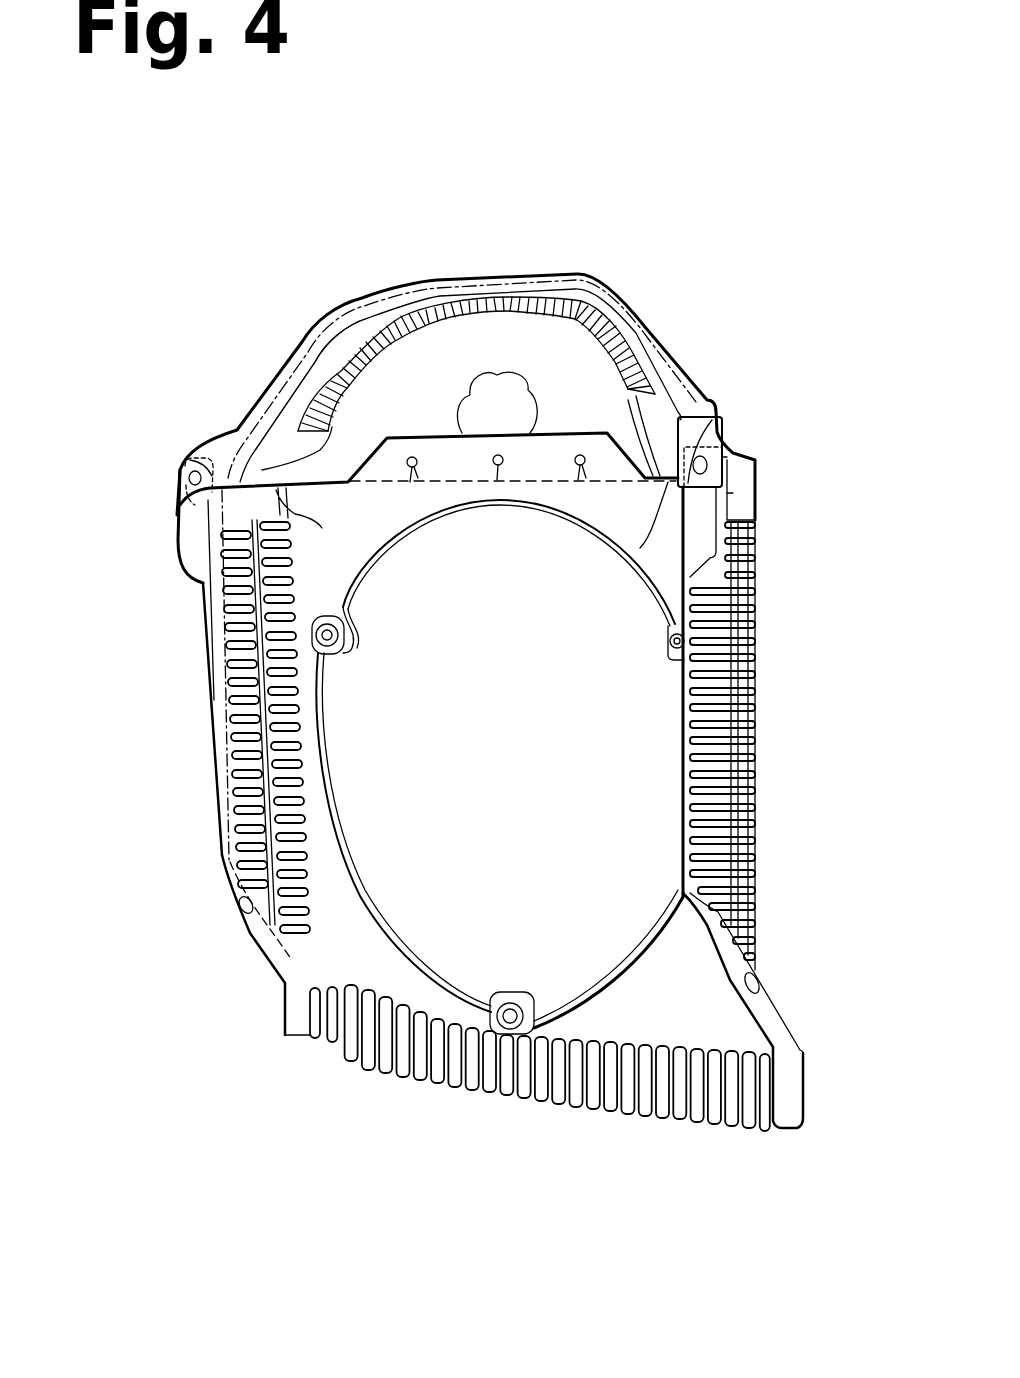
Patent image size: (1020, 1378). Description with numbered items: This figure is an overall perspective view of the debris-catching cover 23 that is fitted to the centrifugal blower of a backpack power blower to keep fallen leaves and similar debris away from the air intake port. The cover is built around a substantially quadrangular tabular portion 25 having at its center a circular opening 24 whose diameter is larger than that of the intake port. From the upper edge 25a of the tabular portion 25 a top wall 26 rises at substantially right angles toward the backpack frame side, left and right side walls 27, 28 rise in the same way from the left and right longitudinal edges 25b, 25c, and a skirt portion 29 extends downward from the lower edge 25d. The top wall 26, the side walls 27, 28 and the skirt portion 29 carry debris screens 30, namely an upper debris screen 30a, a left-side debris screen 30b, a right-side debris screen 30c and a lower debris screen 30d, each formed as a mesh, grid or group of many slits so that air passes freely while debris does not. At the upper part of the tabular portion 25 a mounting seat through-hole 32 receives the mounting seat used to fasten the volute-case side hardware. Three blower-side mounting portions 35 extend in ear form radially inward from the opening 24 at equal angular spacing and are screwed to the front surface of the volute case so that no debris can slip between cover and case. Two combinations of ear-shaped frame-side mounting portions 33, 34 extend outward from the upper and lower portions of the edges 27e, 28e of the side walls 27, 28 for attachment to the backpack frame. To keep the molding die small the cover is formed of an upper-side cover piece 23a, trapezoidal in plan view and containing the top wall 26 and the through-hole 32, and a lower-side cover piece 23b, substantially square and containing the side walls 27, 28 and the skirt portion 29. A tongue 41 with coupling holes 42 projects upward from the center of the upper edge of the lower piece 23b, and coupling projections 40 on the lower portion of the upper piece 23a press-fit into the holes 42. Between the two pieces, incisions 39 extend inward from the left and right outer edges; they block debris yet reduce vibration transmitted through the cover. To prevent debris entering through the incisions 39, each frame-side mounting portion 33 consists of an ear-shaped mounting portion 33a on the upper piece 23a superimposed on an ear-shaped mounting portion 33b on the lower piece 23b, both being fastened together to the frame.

The debris-catching cover 23 is at (636, 283).
The upper-side cover piece 23a is at (259, 386).
The lower-side cover piece 23b is at (210, 795).
The opening 24 is at (392, 548).
The tabular portion 25 is at (640, 425).
The upper edge 25a is at (480, 296).
The left longitudinal edge 25b is at (760, 670).
The right longitudinal edge 25c is at (308, 697).
The lower edge 25d is at (558, 1015).
The top wall 26 is at (444, 326).
The left side wall 27 is at (720, 750).
The edge of left side wall 27e is at (683, 735).
The right side wall 28 is at (291, 774).
The edge of right side wall 28e is at (212, 713).
The skirt portion 29 is at (470, 1075).
The debris screens 30 is at (533, 746).
The upper debris screen 30a is at (542, 316).
The left-side debris screen 30b is at (711, 636).
The right-side debris screen 30c is at (291, 721).
The lower debris screen 30d is at (520, 1082).
The mounting seat through-hole 32 is at (468, 410).
The frame-side mounting portion 33 is at (470, 450).
The ear-shaped mounting portion 33a is at (192, 462).
The ear-shaped mounting portion 33b is at (186, 480).
The frame-side mounting portion 34 is at (240, 925).
The blower-side mounting portion 35 is at (346, 640).
The incisions 39 is at (285, 492).
The coupling projections 40 is at (410, 482).
The tongue 41 is at (410, 435).
The coupling holes 42 is at (407, 459).